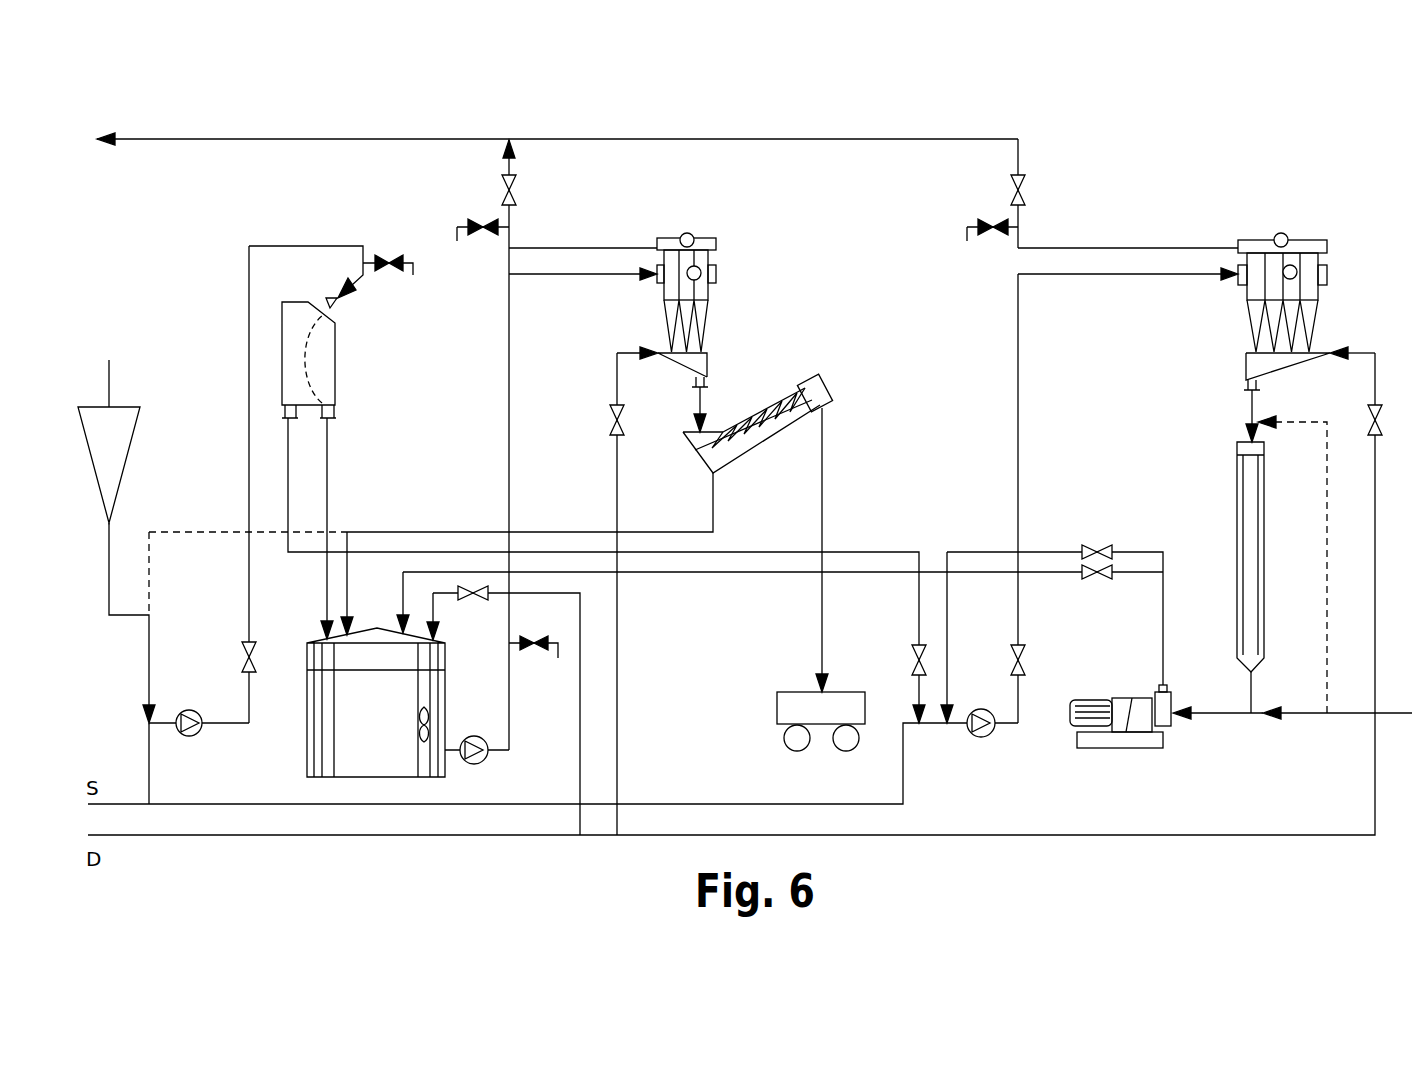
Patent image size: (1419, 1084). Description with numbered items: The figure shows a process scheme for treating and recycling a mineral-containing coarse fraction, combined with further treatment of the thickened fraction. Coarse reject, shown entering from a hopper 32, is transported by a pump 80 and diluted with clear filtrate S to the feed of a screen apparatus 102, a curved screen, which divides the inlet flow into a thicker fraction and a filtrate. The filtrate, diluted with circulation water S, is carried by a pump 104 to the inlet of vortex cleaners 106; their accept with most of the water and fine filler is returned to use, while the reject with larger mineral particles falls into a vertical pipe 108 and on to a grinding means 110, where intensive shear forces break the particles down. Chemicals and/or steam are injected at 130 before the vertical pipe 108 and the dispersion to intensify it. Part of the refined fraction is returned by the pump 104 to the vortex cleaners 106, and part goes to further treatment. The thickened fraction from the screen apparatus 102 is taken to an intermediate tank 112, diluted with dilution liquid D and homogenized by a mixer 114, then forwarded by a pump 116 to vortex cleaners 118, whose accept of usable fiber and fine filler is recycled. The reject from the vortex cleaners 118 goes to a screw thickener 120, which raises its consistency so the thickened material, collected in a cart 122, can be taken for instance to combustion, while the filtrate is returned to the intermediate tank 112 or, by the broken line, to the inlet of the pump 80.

The hopper 32 is at (130, 447).
The pump 80 is at (182, 738).
The screen apparatus 102 is at (282, 333).
The pump 104 is at (972, 740).
The vortex cleaners 106 is at (1295, 253).
The vertical pipe 108 is at (1248, 557).
The grinding means 110 is at (1125, 742).
The intermediate tank 112 is at (342, 735).
The mixer 114 is at (433, 723).
The pump 116 is at (488, 758).
The vortex cleaners 118 is at (703, 257).
The screw thickener 120 is at (775, 403).
The cart 122 is at (798, 702).
The injection point 130 is at (1270, 708).